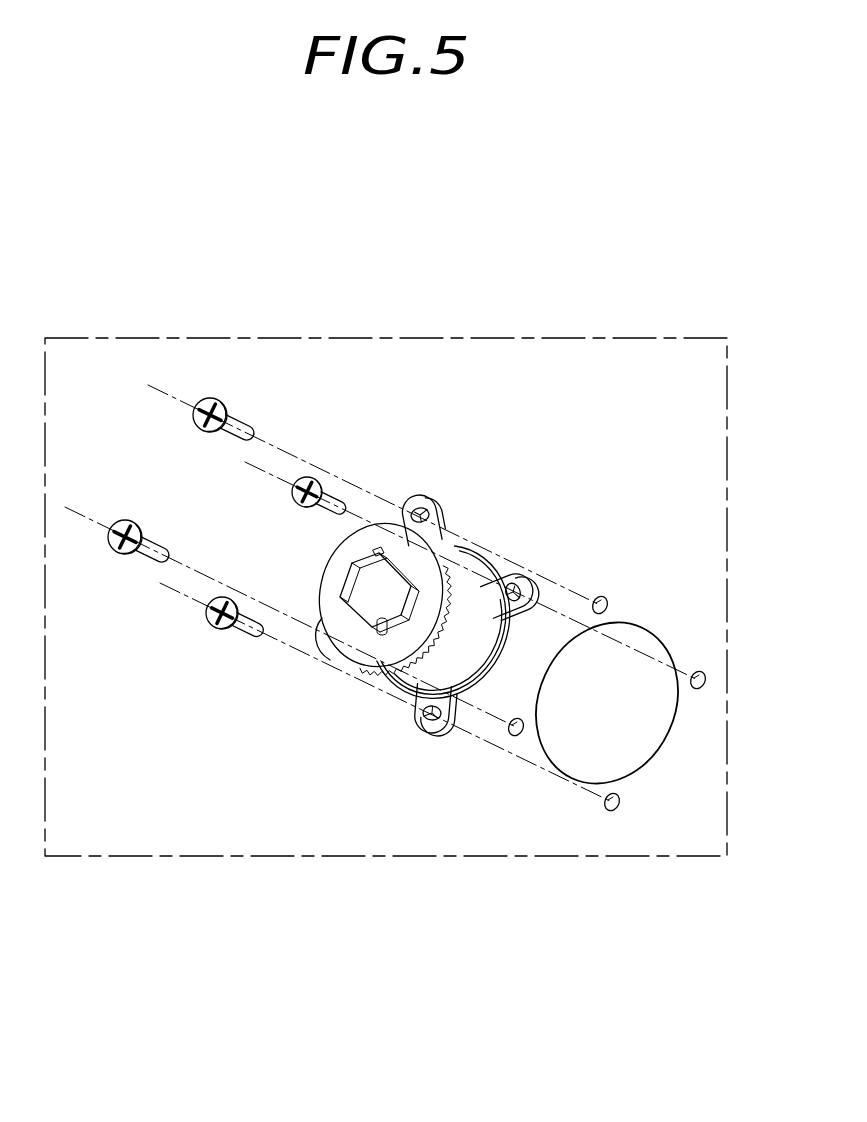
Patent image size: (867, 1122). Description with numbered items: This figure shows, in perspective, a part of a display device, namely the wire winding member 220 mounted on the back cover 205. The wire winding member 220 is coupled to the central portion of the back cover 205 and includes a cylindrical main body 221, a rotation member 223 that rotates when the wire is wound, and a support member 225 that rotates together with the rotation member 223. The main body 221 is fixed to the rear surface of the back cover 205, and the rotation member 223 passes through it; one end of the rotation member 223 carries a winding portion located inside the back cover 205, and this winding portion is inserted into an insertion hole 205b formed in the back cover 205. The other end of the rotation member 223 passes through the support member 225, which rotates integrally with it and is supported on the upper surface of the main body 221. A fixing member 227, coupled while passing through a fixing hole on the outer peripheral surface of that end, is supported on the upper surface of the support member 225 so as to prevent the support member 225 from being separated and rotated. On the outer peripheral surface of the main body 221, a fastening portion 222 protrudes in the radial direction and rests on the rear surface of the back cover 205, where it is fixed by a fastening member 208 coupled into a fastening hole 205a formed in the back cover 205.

The back cover 205 is at (652, 398).
The fastening hole 205a is at (605, 806).
The insertion hole 205b is at (662, 733).
The fastening member 208 is at (240, 412).
The wire winding member 220 is at (379, 604).
The main body 221 is at (462, 575).
The fastening portion 222 is at (509, 574).
The rotation member 223 is at (362, 567).
The support member 225 is at (355, 622).
The fixing member 227 is at (376, 628).